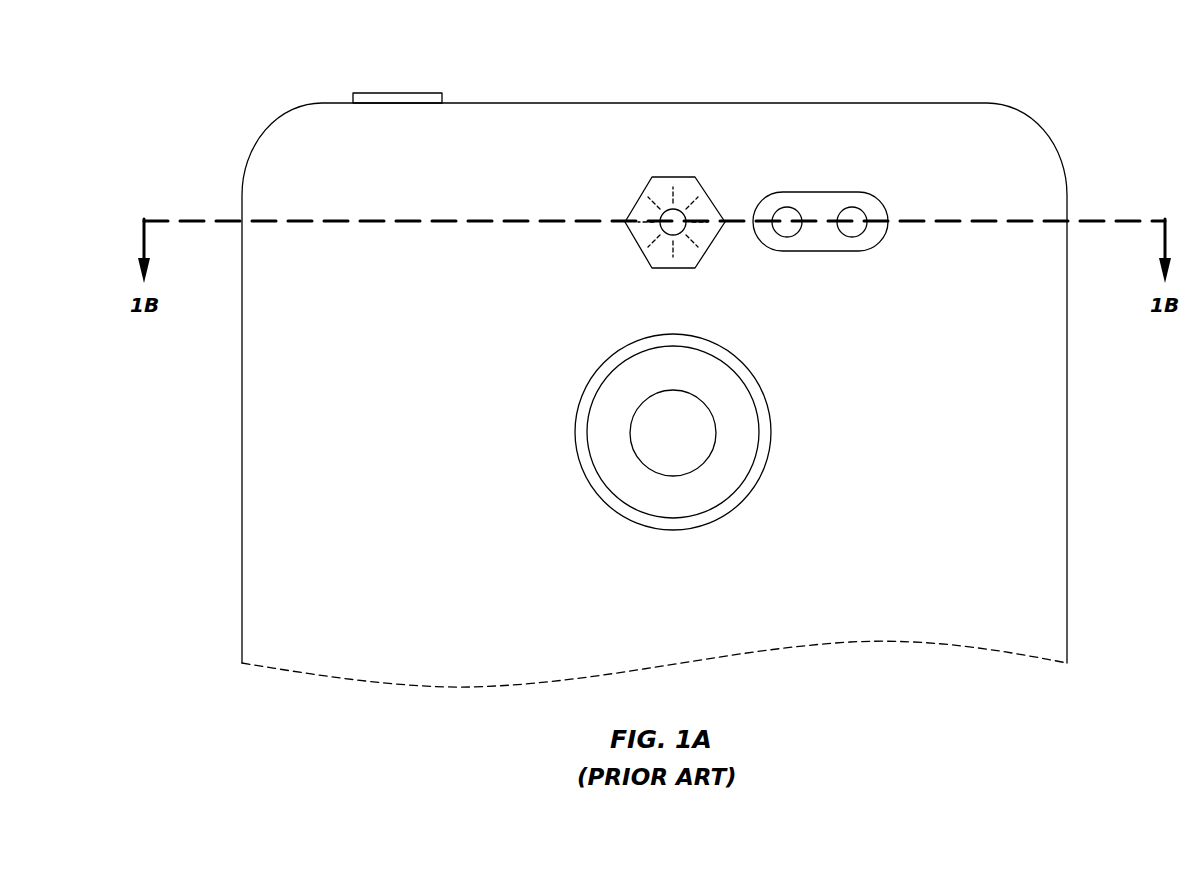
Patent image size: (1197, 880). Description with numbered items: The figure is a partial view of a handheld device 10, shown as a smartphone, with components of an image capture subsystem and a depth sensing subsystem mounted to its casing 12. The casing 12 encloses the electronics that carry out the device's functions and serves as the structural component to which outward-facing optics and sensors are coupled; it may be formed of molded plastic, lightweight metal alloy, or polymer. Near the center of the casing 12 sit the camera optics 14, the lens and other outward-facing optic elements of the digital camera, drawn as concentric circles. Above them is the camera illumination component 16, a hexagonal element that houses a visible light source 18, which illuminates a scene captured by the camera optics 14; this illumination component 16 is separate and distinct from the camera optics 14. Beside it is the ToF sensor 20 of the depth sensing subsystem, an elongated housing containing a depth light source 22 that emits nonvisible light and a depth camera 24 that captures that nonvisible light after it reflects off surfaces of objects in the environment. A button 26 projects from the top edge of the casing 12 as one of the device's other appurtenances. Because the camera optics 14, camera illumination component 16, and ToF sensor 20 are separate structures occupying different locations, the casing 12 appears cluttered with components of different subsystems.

The handheld device 10 is at (966, 70).
The casing 12 is at (674, 103).
The camera optics 14 is at (588, 521).
The camera illumination component 16 is at (640, 200).
The visible light source 18 is at (668, 235).
The ToF sensor 20 is at (858, 192).
The depth light source 22 is at (787, 207).
The depth camera 24 is at (852, 237).
The button 26 is at (392, 93).